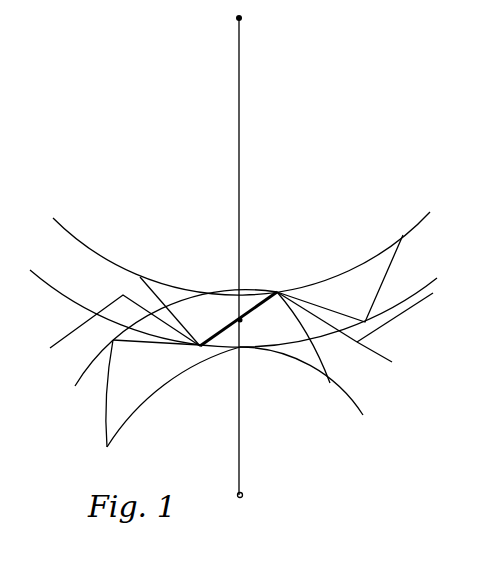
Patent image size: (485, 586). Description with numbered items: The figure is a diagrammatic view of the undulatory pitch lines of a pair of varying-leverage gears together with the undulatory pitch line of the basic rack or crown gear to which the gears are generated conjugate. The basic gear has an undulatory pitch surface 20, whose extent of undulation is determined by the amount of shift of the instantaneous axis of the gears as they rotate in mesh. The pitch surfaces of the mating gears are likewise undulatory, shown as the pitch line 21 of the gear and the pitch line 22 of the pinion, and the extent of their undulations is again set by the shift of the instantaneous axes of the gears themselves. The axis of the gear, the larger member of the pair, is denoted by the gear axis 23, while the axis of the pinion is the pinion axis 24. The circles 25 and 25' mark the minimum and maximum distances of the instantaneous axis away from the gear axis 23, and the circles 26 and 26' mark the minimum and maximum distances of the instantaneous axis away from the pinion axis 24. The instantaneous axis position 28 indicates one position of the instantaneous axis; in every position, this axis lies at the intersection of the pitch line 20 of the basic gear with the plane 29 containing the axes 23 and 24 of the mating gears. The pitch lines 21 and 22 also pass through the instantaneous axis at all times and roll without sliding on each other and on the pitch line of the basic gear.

The undulatory pitch surface of the basic gear 20 is at (65, 335).
The pitch line of the gear 21 is at (163, 298).
The pitch line of the pinion 22 is at (103, 412).
The gear axis 23 is at (241, 19).
The pinion axis 24 is at (243, 494).
The circle of minimum distance from gear axis 25 is at (241, 238).
The circle of maximum distance from gear axis 25' is at (254, 308).
The circle of minimum distance from pinion axis 26 is at (219, 368).
The circle of maximum distance from pinion axis 26' is at (396, 355).
The instantaneous axis position 28 is at (242, 321).
The plane containing the axes 29 is at (240, 193).